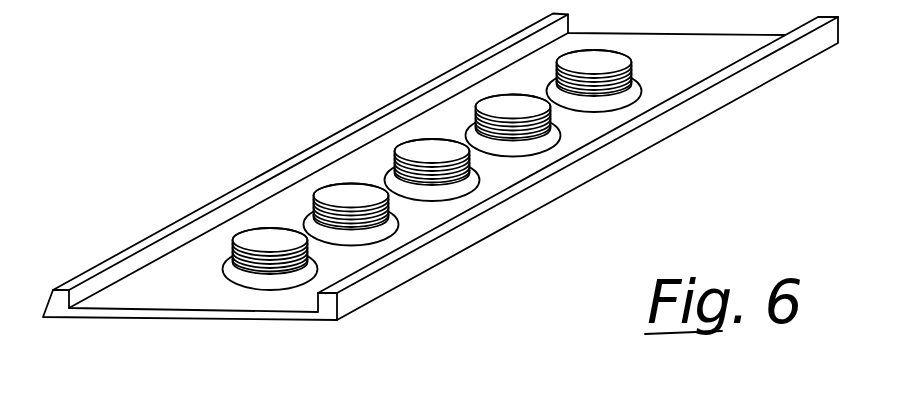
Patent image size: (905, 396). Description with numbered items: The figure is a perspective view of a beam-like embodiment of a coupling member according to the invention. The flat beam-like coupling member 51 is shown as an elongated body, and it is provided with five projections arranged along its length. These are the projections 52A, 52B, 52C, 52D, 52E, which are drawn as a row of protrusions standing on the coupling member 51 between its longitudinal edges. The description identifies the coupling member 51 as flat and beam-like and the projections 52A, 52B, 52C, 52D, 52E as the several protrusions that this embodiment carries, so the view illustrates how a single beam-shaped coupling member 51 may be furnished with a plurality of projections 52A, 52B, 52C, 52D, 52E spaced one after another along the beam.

The coupling member 51 is at (180, 320).
The projection 52A is at (287, 248).
The projection 52B is at (368, 204).
The projection 52C is at (449, 159).
The projection 52D is at (530, 114).
The projection 52E is at (611, 70).